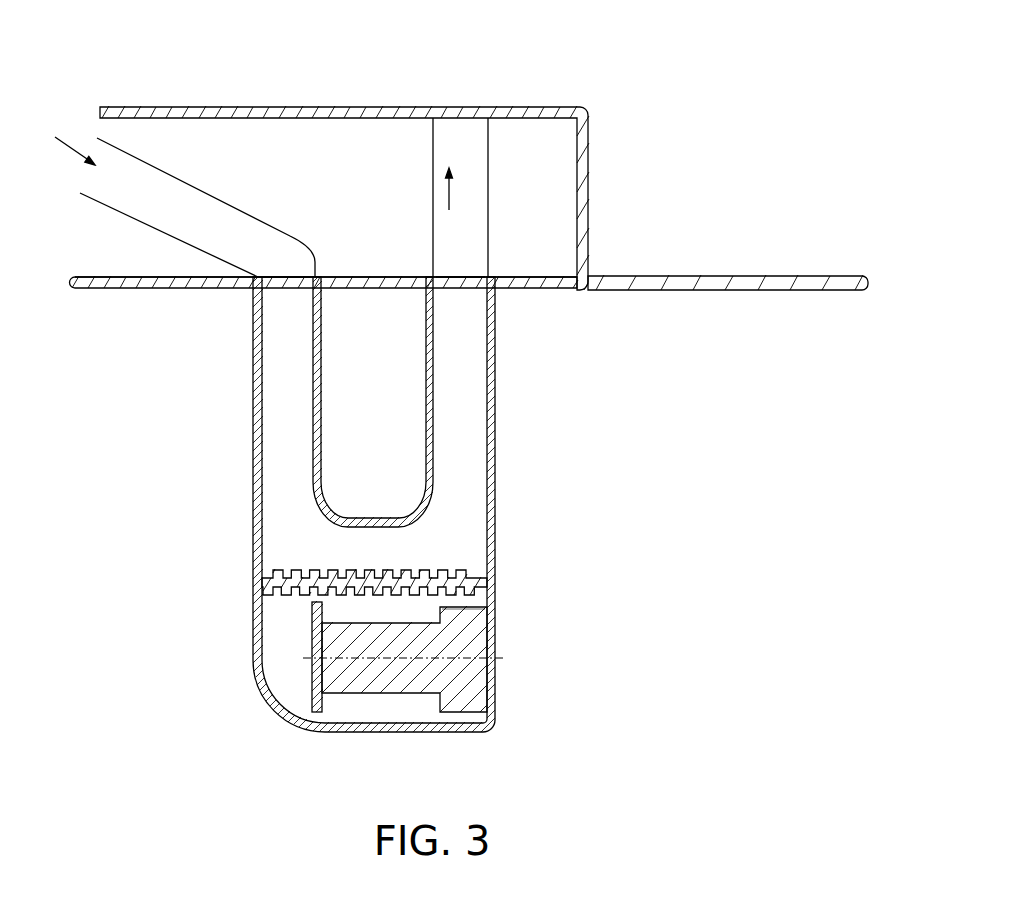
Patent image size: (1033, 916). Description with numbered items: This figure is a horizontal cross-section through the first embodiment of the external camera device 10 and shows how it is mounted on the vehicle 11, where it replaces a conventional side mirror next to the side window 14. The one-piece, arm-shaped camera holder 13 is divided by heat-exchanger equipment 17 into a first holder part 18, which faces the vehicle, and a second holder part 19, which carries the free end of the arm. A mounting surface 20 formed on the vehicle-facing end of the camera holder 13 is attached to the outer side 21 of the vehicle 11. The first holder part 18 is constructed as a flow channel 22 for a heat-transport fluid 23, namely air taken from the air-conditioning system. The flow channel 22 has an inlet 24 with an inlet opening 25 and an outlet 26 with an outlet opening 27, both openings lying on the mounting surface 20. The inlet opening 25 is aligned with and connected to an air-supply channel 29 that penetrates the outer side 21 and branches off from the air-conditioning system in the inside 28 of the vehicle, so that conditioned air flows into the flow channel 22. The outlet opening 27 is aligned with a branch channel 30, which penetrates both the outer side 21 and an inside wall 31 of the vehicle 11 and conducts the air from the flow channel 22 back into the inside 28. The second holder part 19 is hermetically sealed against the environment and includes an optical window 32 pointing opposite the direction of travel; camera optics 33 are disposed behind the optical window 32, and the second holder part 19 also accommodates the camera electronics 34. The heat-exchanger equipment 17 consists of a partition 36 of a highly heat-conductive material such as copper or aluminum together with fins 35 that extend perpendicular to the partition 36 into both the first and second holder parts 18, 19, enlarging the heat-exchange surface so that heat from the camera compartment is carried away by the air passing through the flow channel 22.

The external camera device 10 is at (373, 522).
The vehicle 11 is at (461, 197).
The camera holder 13 is at (439, 520).
The side window 14 is at (721, 275).
The heat-exchanger equipment 17 is at (273, 549).
The first holder part 18 is at (616, 488).
The second holder part 19 is at (483, 640).
The mounting surface 20 is at (371, 299).
The outer side 21 is at (147, 290).
The flow channel 22 is at (279, 406).
The heat-transport fluid 23 is at (269, 164).
The inlet 24 is at (285, 300).
The inlet opening 25 is at (280, 277).
The outlet 26 is at (468, 300).
The outlet opening 27 is at (458, 277).
The inside of the vehicle 28 is at (447, 73).
The air-supply channel 29 is at (205, 190).
The branch channel 30 is at (488, 214).
The inside wall 31 is at (205, 107).
The optical window 32 is at (456, 685).
The camera optics 33 is at (467, 690).
The camera electronics 34 is at (316, 712).
The fins 35 is at (425, 570).
The partition 36 is at (495, 583).